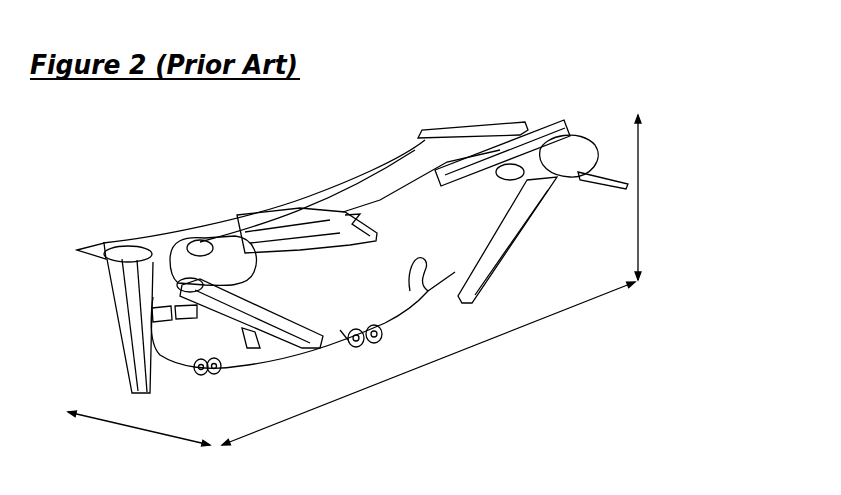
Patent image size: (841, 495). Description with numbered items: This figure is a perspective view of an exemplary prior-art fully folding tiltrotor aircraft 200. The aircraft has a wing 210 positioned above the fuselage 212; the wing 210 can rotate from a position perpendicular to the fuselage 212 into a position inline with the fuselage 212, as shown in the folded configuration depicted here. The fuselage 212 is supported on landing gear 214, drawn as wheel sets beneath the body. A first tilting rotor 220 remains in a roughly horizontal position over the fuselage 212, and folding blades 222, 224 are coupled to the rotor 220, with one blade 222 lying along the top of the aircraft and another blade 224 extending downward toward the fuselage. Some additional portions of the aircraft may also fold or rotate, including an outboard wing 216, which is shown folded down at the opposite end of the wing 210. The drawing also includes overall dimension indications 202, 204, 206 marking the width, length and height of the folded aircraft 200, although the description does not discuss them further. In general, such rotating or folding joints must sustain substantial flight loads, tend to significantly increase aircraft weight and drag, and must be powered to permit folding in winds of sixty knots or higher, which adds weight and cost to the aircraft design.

The tiltrotor aircraft 200 is at (155, 160).
The width dimension 202 is at (104, 421).
The length dimension 204 is at (522, 322).
The height dimension 206 is at (639, 238).
The wing 210 is at (343, 192).
The fuselage 212 is at (178, 366).
The landing gear 214 is at (345, 337).
The outboard wing 216 is at (122, 333).
The first tilting rotor 220 is at (597, 140).
The folding blade 222 is at (548, 120).
The folding blade 224 is at (466, 298).